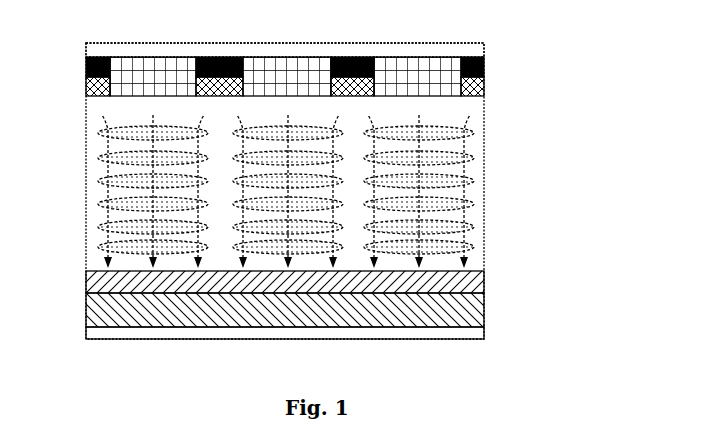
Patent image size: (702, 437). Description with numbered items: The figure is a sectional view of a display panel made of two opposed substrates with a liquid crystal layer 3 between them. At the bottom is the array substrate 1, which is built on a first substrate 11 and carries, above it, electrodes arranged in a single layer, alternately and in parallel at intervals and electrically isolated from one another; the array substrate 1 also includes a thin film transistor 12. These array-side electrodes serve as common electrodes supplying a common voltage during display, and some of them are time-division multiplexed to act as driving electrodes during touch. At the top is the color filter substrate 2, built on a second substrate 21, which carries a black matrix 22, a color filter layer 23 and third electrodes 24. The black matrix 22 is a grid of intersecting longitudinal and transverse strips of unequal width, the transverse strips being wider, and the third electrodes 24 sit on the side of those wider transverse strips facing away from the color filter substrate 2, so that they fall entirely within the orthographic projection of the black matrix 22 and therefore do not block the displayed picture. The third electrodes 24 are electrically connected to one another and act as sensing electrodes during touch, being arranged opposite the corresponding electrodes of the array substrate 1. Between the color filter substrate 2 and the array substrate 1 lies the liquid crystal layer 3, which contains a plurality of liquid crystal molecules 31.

The array substrate 1 is at (68, 273).
The first substrate 11 is at (475, 338).
The thin film transistor 12 is at (483, 313).
The color filter substrate 2 is at (75, 48).
The second substrate 21 is at (484, 44).
The black matrix 22 is at (484, 66).
The color filter layer 23 is at (406, 77).
The third electrode 24 is at (484, 88).
The liquid crystal layer 3 is at (470, 213).
The liquid crystal 31 is at (472, 158).